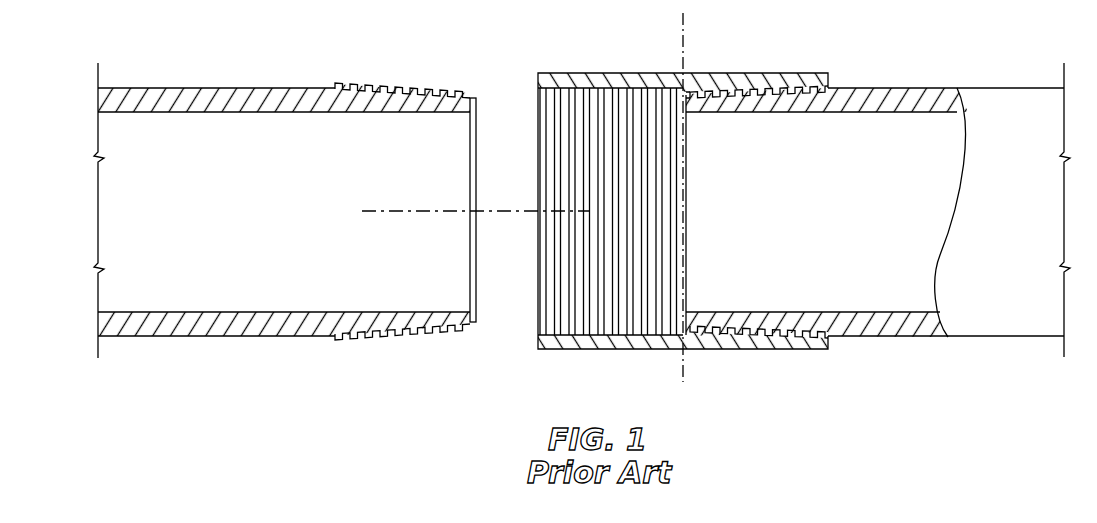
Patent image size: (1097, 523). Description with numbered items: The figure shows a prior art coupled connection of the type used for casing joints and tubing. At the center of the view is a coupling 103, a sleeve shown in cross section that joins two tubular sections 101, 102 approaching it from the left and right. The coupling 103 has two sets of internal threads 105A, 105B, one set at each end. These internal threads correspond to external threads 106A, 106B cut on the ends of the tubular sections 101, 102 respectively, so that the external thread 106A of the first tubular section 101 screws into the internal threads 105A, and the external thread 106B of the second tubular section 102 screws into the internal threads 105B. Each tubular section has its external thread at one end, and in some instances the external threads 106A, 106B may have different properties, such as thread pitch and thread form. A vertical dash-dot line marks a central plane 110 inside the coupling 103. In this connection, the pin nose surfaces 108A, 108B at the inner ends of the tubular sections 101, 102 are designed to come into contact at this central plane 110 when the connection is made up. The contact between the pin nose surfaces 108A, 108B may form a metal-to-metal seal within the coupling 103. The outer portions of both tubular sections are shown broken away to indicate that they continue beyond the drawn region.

The tubular section 101 is at (223, 223).
The tubular section 102 is at (925, 224).
The coupling 103 is at (700, 78).
The internal threads 105A is at (561, 90).
The internal threads 105B is at (781, 92).
The external thread 106A is at (425, 88).
The external thread 106B is at (786, 96).
The pin nose surface 108A is at (478, 318).
The pin nose surface 108B is at (676, 320).
The central plane 110 is at (680, 52).